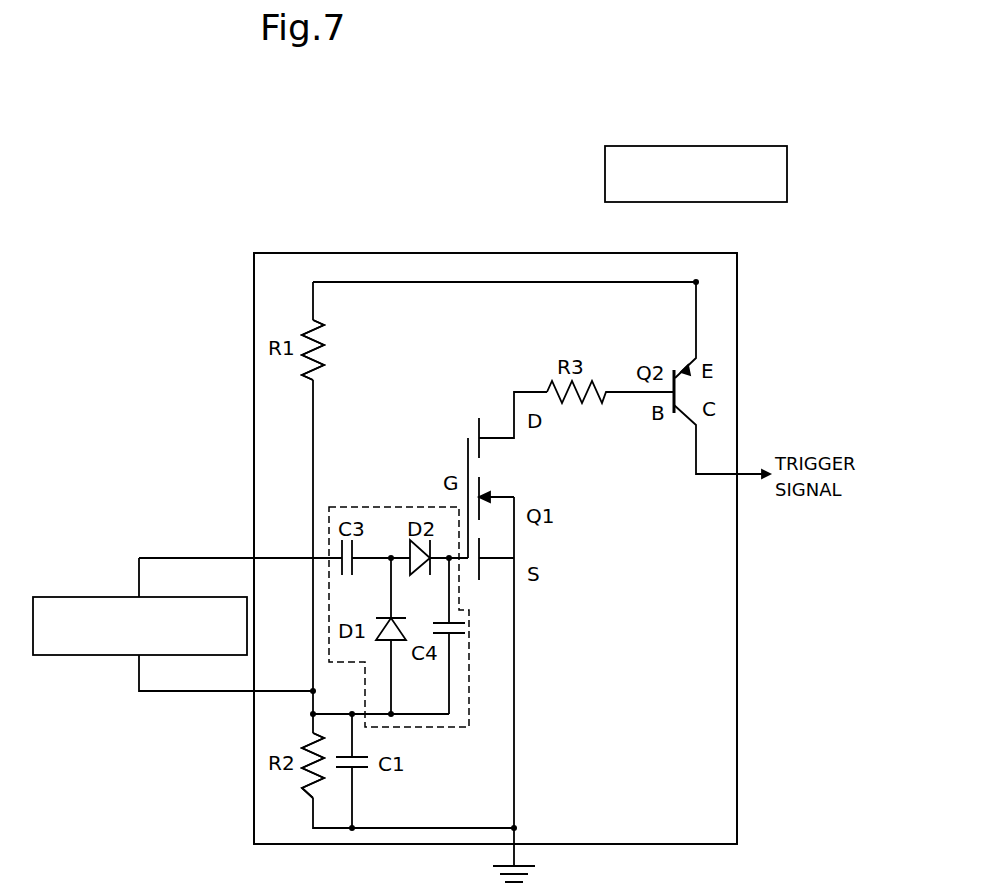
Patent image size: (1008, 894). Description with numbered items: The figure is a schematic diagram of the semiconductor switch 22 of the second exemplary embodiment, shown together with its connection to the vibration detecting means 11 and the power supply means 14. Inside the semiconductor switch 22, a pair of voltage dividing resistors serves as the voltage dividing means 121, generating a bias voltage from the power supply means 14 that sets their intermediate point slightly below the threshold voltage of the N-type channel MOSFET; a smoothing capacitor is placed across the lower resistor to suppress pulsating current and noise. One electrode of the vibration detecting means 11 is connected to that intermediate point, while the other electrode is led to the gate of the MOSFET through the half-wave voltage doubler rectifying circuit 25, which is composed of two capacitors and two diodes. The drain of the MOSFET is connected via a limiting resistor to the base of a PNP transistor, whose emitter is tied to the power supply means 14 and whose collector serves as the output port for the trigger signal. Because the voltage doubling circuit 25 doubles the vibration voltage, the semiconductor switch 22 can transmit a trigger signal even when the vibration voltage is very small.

The semiconductor switch 22 is at (603, 104).
The power supply means 14 is at (788, 176).
The vibration detecting means 11 is at (67, 656).
The half-wave voltage doubler rectifying circuit 25 is at (366, 507).
The voltage dividing means 121 is at (308, 363).